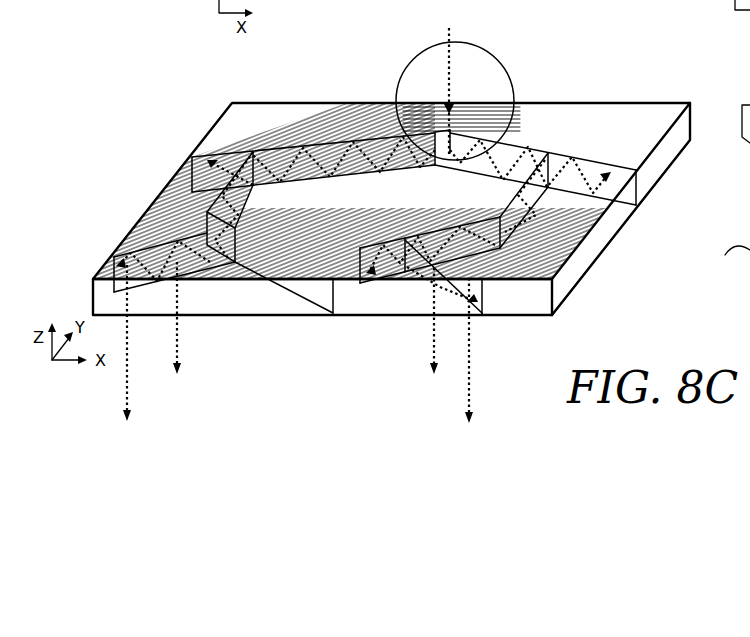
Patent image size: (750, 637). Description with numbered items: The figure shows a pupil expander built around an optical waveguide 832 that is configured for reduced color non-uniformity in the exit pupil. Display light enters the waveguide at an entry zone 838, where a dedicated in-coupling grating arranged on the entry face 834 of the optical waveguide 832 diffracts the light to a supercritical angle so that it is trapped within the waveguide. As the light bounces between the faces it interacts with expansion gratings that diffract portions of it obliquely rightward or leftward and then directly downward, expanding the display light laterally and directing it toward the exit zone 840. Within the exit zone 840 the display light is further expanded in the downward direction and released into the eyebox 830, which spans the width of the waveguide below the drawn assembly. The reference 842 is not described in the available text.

The eyebox 830 is at (687, 455).
The optical waveguide 832 is at (702, 159).
The entry face 834 is at (660, 134).
The entry zone 838 is at (492, 92).
The exit zone 840 is at (650, 205).
The waveguide layer 842 is at (135, 93).